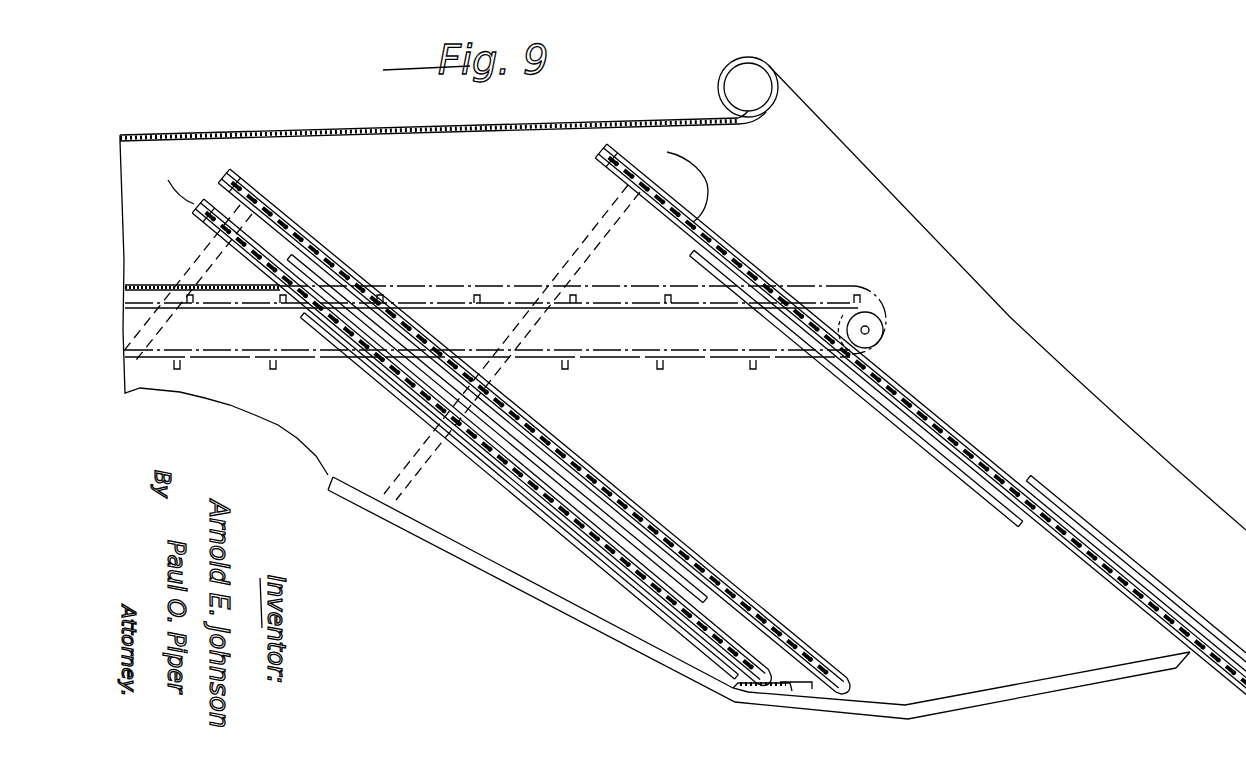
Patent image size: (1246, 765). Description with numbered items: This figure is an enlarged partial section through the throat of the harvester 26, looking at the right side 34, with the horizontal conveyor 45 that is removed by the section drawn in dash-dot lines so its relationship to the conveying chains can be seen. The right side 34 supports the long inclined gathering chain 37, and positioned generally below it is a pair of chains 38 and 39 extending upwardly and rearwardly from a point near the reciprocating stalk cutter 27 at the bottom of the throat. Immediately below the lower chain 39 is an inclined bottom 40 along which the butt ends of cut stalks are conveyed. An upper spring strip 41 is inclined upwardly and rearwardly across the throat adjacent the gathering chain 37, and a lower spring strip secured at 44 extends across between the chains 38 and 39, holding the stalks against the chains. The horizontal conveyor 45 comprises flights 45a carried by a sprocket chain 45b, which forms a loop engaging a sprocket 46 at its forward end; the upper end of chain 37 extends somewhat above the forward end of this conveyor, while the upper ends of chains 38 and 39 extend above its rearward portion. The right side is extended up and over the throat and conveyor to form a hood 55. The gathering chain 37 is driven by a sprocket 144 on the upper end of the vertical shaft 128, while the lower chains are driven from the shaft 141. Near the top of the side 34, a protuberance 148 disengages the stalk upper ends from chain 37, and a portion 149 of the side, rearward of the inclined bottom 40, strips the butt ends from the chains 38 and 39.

The harvester 26 is at (867, 163).
The reciprocating stalk cutter 27 is at (776, 690).
The right side 34 is at (1142, 475).
The long inclined gathering chain 37 is at (968, 480).
The chain 38 is at (750, 604).
The lower chain 39 is at (661, 601).
The inclined bottom 40 is at (614, 567).
The upper spring strip 41 is at (893, 424).
The securing point of lower spring strip 44 is at (663, 561).
The horizontal conveyor 45 is at (639, 303).
The flights 45a is at (753, 366).
The sprocket chain 45b is at (618, 360).
The sprocket 46 is at (838, 306).
The hood 55 is at (540, 123).
The vertical shaft 128 is at (592, 241).
The shaft 141 is at (203, 271).
The sprocket 144 is at (667, 190).
The protuberance 148 is at (698, 207).
The portion of the side 149 is at (160, 229).